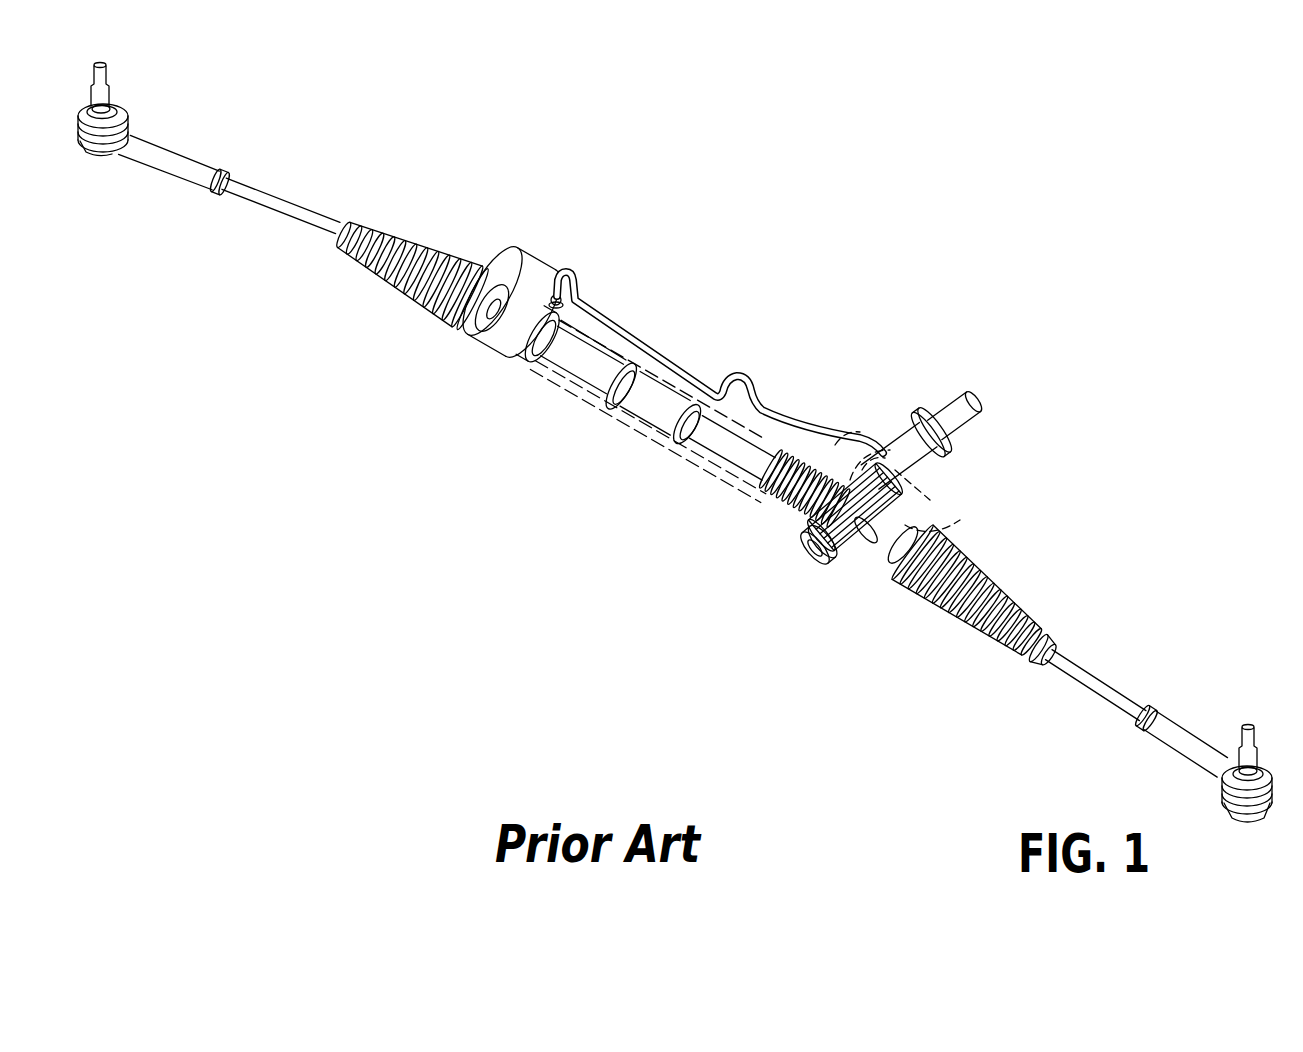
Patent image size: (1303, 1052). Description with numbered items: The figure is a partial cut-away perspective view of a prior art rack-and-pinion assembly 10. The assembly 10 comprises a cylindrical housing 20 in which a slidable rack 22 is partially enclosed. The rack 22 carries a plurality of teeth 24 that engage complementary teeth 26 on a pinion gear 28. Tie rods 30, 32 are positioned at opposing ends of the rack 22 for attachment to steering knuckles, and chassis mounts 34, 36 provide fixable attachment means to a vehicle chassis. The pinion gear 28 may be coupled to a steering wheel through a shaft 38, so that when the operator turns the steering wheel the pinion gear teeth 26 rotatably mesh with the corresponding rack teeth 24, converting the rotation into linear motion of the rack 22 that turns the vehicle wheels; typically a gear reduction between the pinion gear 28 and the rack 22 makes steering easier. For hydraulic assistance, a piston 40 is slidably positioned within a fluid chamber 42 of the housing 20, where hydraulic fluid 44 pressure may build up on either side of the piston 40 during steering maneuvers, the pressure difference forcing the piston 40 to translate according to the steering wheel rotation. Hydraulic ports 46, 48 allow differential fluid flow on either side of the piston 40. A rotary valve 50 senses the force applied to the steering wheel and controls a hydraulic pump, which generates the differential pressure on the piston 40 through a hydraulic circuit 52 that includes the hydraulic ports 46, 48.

The rack-and-pinion assembly 10 is at (830, 236).
The cylindrical housing 20 is at (566, 384).
The rack 22 is at (752, 476).
The teeth 24 is at (802, 470).
The teeth 26 is at (842, 525).
The pinion gear 28 is at (885, 497).
The tie rod 30 is at (187, 170).
The tie rod 32 is at (1173, 743).
The chassis mount 34 is at (488, 308).
The chassis mount 36 is at (866, 535).
The shaft 38 is at (963, 415).
The piston 40 is at (603, 395).
The fluid chamber 42 is at (649, 372).
The hydraulic fluid 44 is at (608, 350).
The hydraulic port 46 is at (556, 300).
The hydraulic port 48 is at (712, 386).
The rotary valve 50 is at (877, 465).
The hydraulic circuit 52 is at (766, 405).